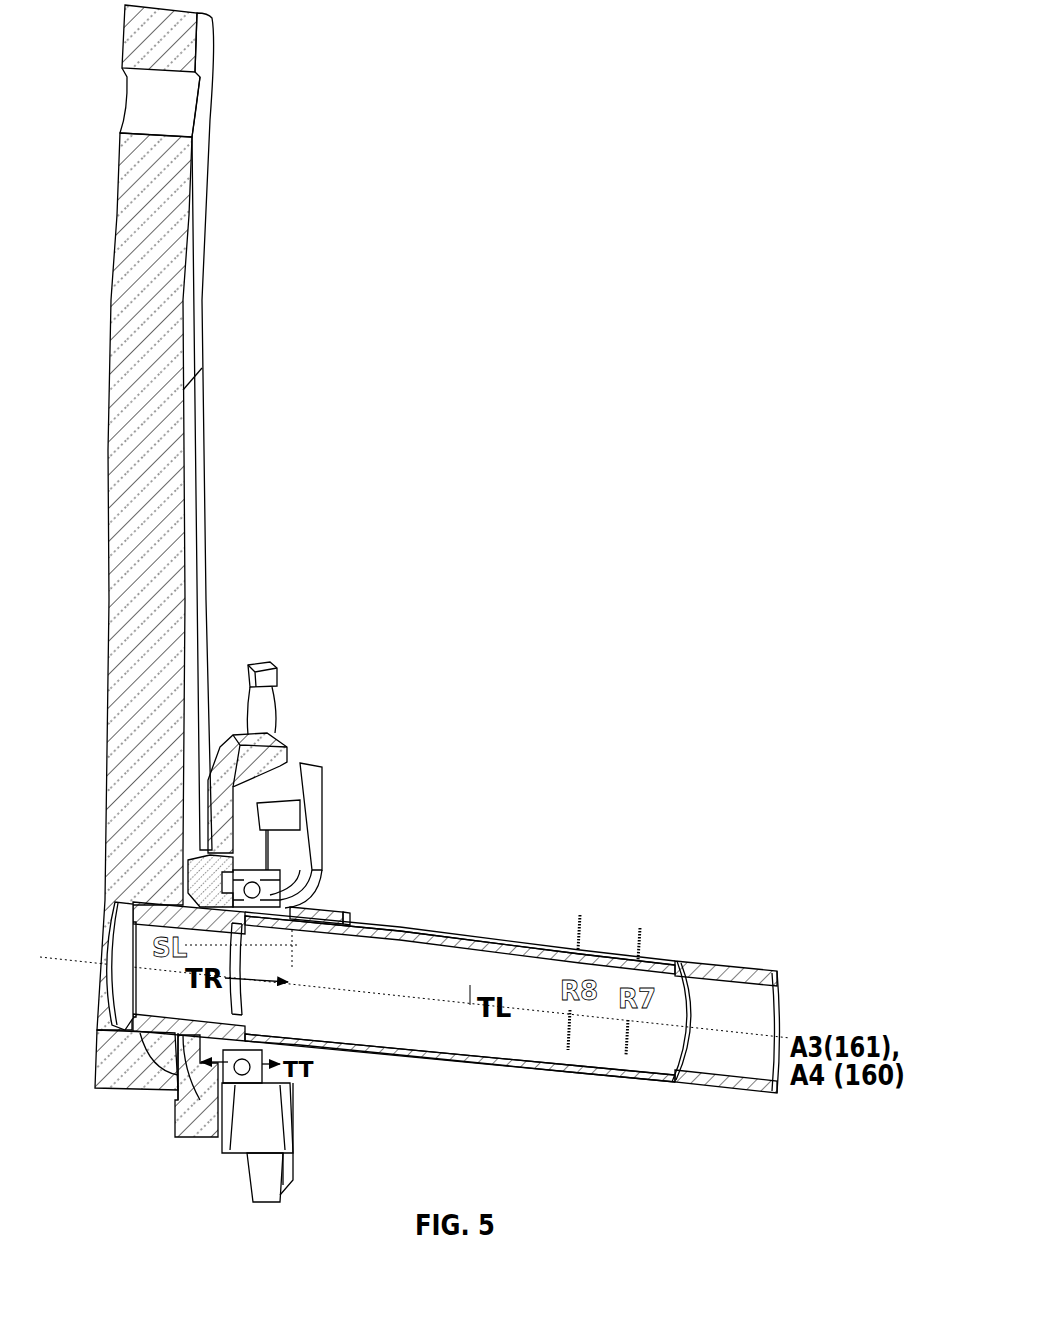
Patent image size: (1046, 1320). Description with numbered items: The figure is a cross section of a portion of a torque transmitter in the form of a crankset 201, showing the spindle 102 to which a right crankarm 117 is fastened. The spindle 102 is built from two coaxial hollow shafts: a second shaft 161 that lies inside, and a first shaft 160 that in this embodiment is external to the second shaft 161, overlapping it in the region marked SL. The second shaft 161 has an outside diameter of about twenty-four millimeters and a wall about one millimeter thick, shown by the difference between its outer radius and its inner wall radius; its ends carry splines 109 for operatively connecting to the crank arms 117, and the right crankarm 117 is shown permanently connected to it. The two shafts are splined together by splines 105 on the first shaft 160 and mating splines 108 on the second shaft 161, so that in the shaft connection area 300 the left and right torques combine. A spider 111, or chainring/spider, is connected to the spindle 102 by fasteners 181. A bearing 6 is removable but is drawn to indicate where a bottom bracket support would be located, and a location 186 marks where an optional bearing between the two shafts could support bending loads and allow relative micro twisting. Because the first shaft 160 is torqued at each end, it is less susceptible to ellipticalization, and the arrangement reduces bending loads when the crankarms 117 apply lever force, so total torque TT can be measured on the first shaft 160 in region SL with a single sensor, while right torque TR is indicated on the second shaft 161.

The right crankarm 117 is at (195, 680).
The fasteners 181 is at (190, 853).
The bearing location 186 is at (133, 1092).
The second shaft 161 is at (512, 932).
The first shaft 160 is at (248, 1009).
The splines 109 is at (114, 988).
The shaft connection area 300 is at (321, 897).
The mating splines 108 is at (345, 908).
The spider 111 is at (275, 868).
The bearing 6 is at (320, 886).
The splines 105 is at (327, 1065).
The crankset 201 is at (497, 733).
The spindle 102 is at (478, 920).